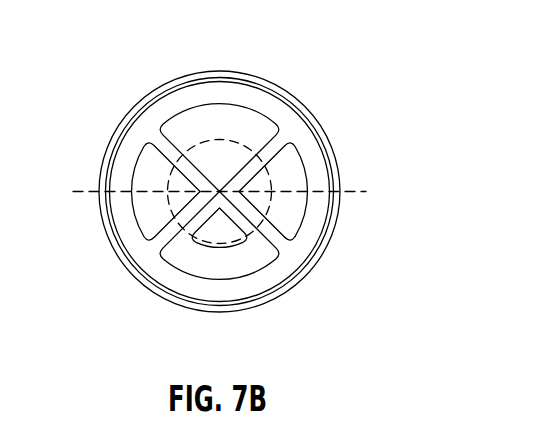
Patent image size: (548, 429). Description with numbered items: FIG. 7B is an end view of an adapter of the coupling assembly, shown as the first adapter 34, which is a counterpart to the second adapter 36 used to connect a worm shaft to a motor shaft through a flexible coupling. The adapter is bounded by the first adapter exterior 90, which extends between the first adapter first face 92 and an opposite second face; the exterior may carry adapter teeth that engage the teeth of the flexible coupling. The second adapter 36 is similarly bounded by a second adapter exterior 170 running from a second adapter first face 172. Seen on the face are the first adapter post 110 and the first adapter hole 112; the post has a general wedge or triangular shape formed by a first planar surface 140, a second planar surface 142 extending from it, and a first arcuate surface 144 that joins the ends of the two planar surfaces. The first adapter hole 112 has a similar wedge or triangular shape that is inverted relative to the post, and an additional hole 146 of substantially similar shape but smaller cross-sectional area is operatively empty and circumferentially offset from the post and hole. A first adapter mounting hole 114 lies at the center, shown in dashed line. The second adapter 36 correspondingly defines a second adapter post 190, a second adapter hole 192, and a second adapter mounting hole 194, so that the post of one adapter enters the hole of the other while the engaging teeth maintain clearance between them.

The first adapter 34 is at (237, 192).
The second adapter 36 is at (268, 54).
The first adapter exterior 90 is at (276, 191).
The second adapter exterior 170 is at (327, 144).
The first adapter first face 92 is at (178, 192).
The second adapter first face 172 is at (143, 116).
The first adapter post 110 is at (234, 274).
The second adapter post 190 is at (239, 281).
The first adapter hole 112 is at (206, 110).
The second adapter hole 192 is at (197, 103).
The first adapter mounting hole 114 is at (295, 161).
The second adapter mounting hole 194 is at (233, 142).
The first planar surface 140 is at (197, 226).
The second planar surface 142 is at (246, 227).
The first arcuate surface 144 is at (198, 278).
The additional hole 146 is at (298, 232).